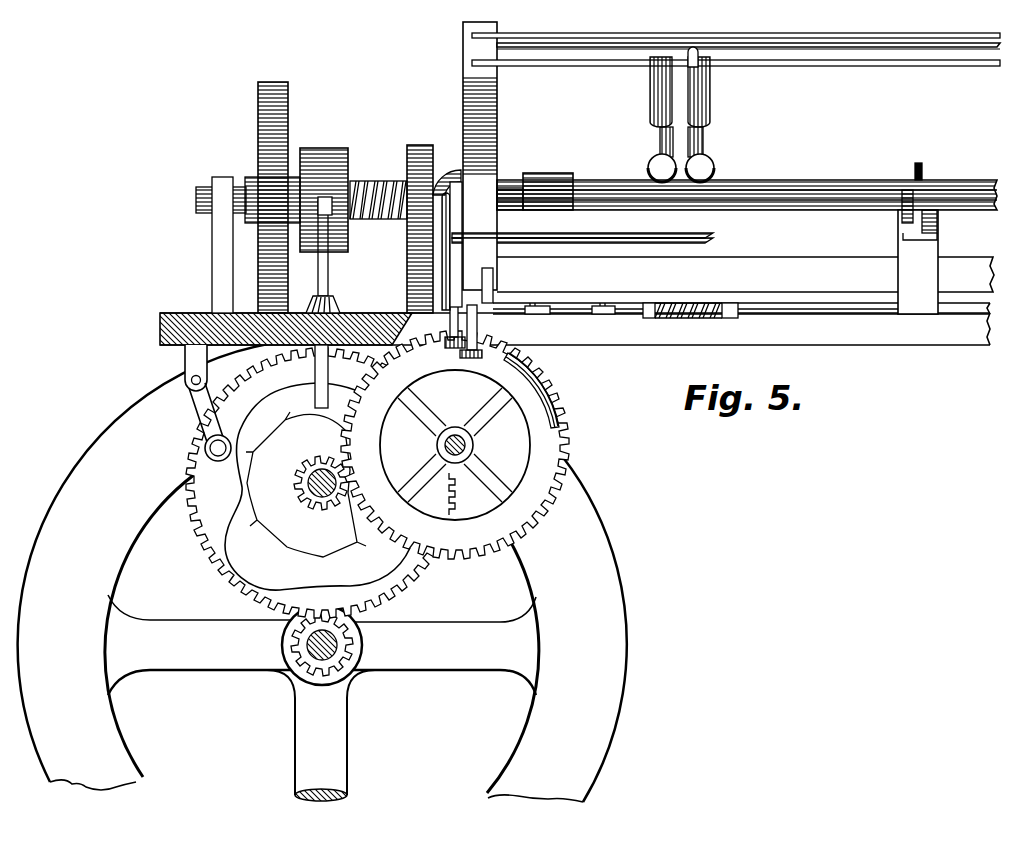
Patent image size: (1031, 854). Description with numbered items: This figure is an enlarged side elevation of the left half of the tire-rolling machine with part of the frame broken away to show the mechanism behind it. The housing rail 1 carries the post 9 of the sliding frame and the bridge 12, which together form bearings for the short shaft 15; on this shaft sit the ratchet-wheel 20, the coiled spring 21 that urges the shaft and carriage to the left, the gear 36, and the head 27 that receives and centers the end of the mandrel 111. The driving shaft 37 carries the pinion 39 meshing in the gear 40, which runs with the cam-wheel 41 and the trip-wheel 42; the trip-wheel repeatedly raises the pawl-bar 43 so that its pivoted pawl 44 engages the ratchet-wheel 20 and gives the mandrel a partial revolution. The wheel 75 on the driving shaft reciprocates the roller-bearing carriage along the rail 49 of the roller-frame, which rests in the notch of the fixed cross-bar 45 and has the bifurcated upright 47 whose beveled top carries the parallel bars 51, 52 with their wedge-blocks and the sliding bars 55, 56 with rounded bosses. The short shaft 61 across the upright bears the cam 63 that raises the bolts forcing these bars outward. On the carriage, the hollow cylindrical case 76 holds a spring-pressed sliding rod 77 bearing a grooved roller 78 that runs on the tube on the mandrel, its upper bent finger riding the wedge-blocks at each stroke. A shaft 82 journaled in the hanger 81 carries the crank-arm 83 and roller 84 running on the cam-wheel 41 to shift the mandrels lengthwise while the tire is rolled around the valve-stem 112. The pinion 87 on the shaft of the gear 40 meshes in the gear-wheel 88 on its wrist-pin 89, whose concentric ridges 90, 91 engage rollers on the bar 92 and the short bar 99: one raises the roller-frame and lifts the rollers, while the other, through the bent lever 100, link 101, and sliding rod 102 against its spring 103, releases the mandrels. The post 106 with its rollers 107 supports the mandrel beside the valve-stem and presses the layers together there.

The rail 1 is at (566, 329).
The post 9 is at (218, 245).
The bridge 12 is at (419, 219).
The short shaft 15 is at (505, 188).
The ratchet-wheel 20 is at (324, 190).
The coiled spring 21 is at (378, 189).
The head 27 is at (548, 180).
The gear 36 is at (272, 186).
The shaft 37 is at (355, 641).
The pinion 39 is at (283, 641).
The gear 40 is at (196, 533).
The cam-wheel 41 is at (317, 486).
The trip-wheel 42 is at (306, 484).
The pawl-bar 43 is at (328, 272).
The pivoted pawl 44 is at (334, 214).
The fixed cross-bar 45 is at (493, 273).
The bifurcated upright 47 is at (492, 156).
The rail 49 is at (636, 238).
The parallel bar 51 is at (748, 51).
The parallel bar 52 is at (748, 52).
The bar 55 is at (808, 37).
The bar 56 is at (826, 66).
The short shaft 61 is at (452, 200).
The cam 63 is at (446, 173).
The wheel 75 is at (323, 570).
The hollow cylindrical case 76 is at (681, 87).
The sliding rod 77 is at (660, 136).
The grooved roller 78 is at (646, 166).
The hanger 81 is at (185, 368).
The shaft 82 is at (190, 385).
The crank-arm 83 is at (197, 420).
The roller 84 is at (218, 461).
The pinion 87 is at (300, 492).
The gear-wheel 88 is at (455, 445).
The wrist-pin 89 is at (466, 445).
The ridge 90 is at (545, 432).
The ridge 91 is at (563, 411).
The bar 92 is at (450, 326).
The short bar 99 is at (477, 326).
The bent lever 100 is at (510, 314).
The link 101 is at (572, 314).
The sliding rod 102 is at (782, 314).
The spring 103 is at (683, 318).
The post 106 is at (918, 262).
The roller 107 is at (902, 220).
The mandrel 111 is at (760, 195).
The valve-stem 112 is at (934, 168).